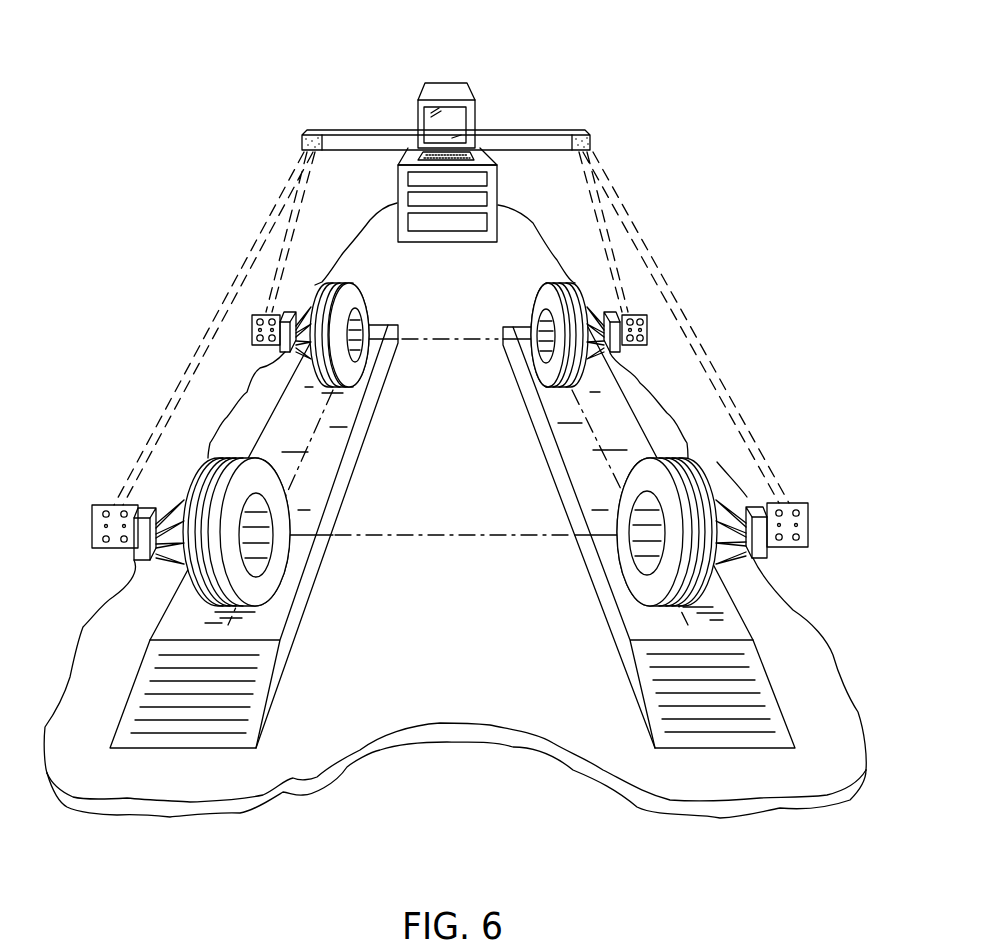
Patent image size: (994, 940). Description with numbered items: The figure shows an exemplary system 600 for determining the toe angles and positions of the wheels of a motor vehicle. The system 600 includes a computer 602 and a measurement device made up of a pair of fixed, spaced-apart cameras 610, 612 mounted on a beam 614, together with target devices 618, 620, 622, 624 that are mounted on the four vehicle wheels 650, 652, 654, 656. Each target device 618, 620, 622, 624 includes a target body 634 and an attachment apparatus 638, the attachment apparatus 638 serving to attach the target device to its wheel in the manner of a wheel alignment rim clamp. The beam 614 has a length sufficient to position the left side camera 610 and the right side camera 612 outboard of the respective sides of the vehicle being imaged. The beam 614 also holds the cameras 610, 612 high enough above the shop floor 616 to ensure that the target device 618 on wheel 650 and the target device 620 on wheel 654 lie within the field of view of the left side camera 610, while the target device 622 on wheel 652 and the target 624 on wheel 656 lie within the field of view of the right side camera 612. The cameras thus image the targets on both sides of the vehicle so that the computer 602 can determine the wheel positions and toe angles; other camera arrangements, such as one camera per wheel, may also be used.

The system 600 is at (701, 26).
The computer 602 is at (451, 90).
The left side camera 610 is at (300, 134).
The right side camera 612 is at (592, 134).
The beam 614 is at (392, 128).
The shop floor 616 is at (380, 258).
The target device 618 is at (252, 332).
The target device 620 is at (111, 505).
The target device 622 is at (647, 330).
The target device 624 is at (808, 527).
The target body 634 is at (293, 310).
The attachment apparatus 638 is at (605, 309).
The wheel 650 is at (365, 372).
The wheel 652 is at (540, 377).
The wheel 654 is at (273, 582).
The wheel 656 is at (630, 573).